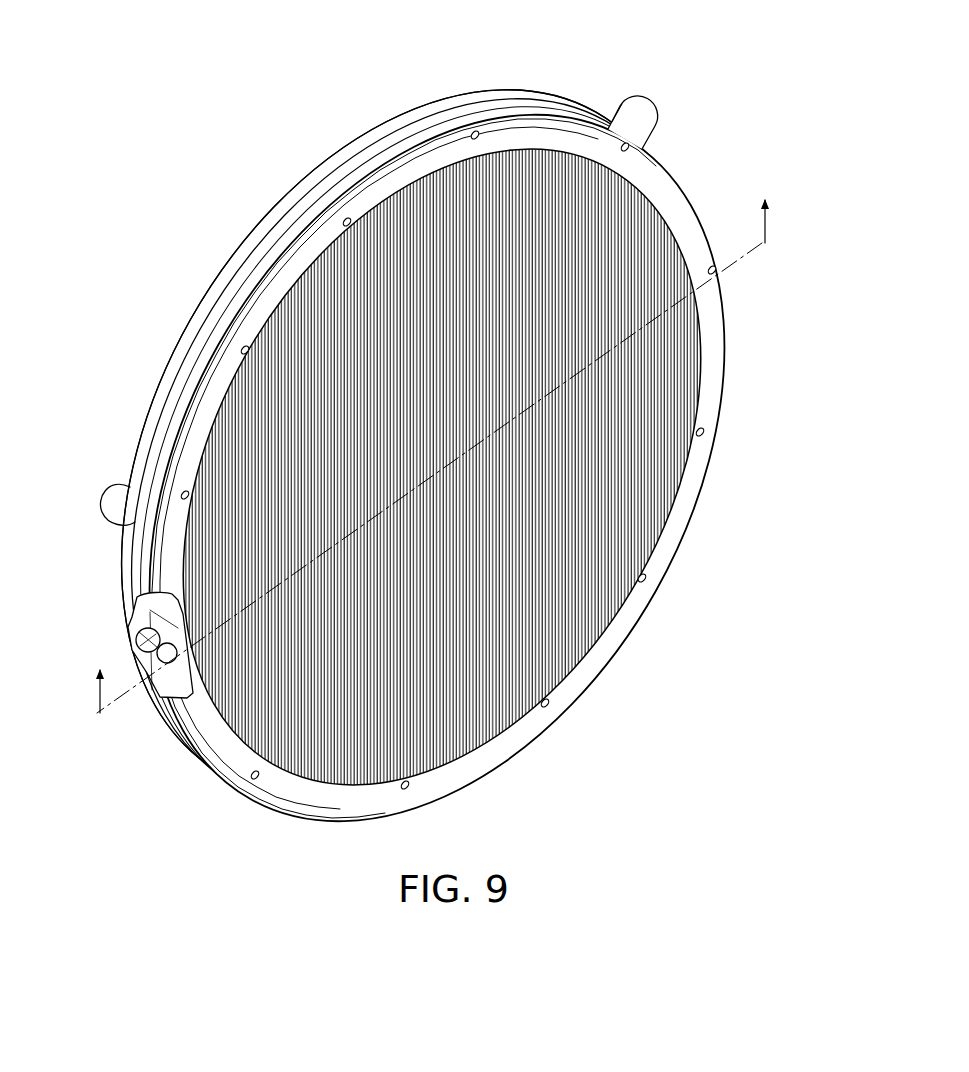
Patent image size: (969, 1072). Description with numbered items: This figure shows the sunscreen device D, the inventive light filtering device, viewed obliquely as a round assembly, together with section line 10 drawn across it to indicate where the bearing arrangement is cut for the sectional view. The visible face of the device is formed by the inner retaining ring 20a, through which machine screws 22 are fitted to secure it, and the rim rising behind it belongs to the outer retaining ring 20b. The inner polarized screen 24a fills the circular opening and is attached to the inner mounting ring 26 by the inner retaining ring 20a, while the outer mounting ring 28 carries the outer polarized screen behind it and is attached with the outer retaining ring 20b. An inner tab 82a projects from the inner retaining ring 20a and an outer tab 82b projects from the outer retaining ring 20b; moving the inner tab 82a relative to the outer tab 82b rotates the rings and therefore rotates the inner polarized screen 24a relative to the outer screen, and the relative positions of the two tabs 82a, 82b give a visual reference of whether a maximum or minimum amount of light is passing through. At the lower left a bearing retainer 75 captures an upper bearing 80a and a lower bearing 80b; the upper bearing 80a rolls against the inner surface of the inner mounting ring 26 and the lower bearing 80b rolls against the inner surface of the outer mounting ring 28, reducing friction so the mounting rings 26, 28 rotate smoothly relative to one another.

The sunscreen device D is at (208, 148).
The inner retaining ring 20a is at (670, 182).
The outer retaining ring 20b is at (318, 176).
The machine screw 22 is at (476, 132).
The inner polarized screen 24a is at (330, 318).
The inner mounting ring 26 is at (407, 143).
The outer mounting ring 28 is at (386, 140).
The bearing retainer 75 is at (165, 603).
The upper bearing 80a is at (160, 672).
The lower bearing 80b is at (145, 637).
The inner tab 82a is at (652, 110).
The outer tab 82b is at (118, 490).
The section line 10 is at (431, 454).